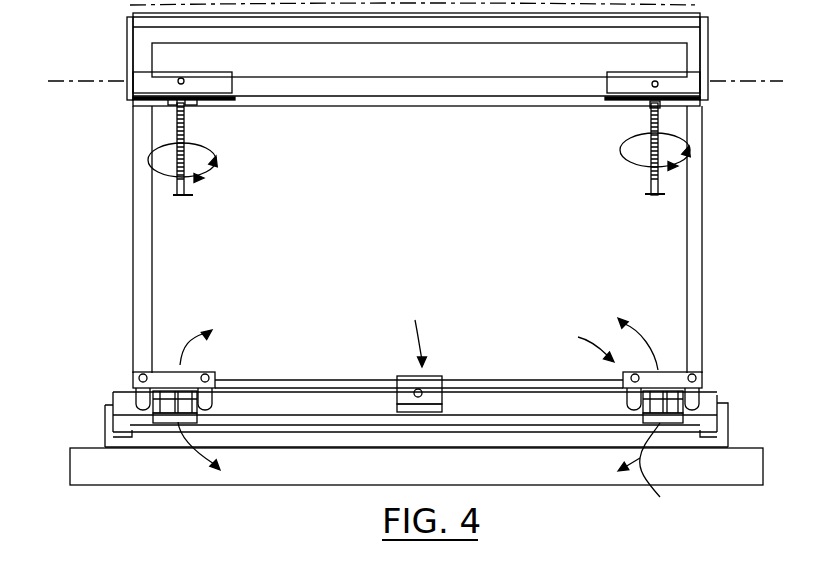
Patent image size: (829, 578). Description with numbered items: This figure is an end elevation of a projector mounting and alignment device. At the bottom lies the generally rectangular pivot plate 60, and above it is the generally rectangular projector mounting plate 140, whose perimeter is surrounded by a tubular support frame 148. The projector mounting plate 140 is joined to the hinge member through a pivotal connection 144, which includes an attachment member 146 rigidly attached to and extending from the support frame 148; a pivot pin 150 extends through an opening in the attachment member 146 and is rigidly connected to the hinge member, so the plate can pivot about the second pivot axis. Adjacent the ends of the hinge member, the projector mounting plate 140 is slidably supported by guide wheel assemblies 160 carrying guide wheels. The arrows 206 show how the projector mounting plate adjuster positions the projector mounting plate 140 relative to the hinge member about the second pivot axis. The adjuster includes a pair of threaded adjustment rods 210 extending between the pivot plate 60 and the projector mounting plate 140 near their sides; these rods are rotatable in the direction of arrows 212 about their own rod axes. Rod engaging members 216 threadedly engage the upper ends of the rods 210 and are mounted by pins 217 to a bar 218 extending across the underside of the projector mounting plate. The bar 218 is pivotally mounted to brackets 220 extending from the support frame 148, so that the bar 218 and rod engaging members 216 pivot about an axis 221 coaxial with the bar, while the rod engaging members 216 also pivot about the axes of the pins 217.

The pivot plate 60 is at (102, 440).
The projector mounting plate 140 is at (668, 240).
The pivotal connection 144 is at (418, 330).
The attachment member 146 is at (438, 380).
The tubular support frame 148 is at (695, 315).
The pivot pin 150 is at (415, 390).
The guide wheel assemblies 160 is at (575, 339).
The arrows 206 is at (182, 345).
The threaded adjustment rods 210 is at (178, 125).
The arrows 212 is at (216, 158).
The rod engaging members 216 is at (185, 105).
The pins 217 is at (184, 80).
The bar 218 is at (397, 90).
The brackets 220 is at (127, 55).
The axis 221 is at (92, 84).